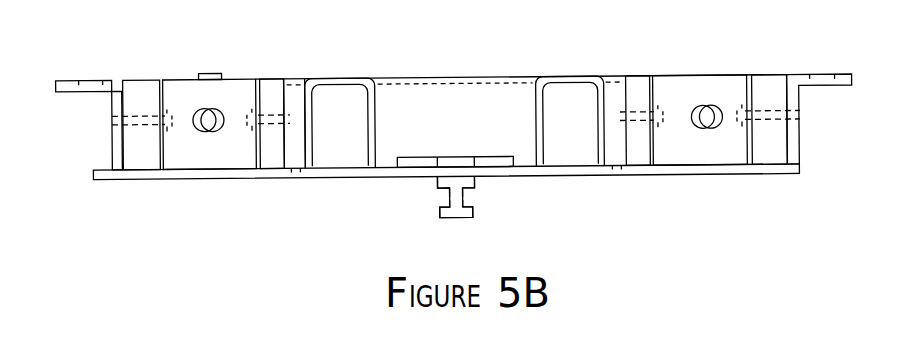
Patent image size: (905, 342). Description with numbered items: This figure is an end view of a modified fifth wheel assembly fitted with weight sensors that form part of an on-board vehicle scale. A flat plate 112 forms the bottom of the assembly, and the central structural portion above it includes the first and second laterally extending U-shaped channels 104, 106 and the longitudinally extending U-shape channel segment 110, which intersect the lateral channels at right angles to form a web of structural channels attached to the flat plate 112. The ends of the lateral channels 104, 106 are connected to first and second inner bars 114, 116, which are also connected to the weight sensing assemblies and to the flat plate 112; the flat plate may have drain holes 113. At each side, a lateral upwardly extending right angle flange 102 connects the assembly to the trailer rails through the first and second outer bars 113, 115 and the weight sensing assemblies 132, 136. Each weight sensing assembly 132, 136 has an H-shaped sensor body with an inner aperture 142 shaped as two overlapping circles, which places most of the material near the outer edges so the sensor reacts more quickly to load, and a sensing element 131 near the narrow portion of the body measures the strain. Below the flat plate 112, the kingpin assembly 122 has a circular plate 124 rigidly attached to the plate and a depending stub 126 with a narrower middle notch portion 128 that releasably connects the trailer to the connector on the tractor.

The right angle flanges 102 is at (54, 92).
The first laterally extending U-shaped channel 104 is at (333, 84).
The second laterally extending U-shaped channel 106 is at (567, 84).
The second longitudinally extending U-shape channel segment 110 is at (455, 83).
The flat plate 112 is at (143, 177).
The first outer bar 113 is at (138, 90).
The first inner bar 114 is at (268, 90).
The second outer bar 115 is at (779, 89).
The second inner bar 116 is at (635, 83).
The kingpin assembly 122 is at (483, 185).
The circular plate 124 is at (457, 158).
The depending stub 126 is at (438, 212).
The narrower middle notch portion 128 is at (444, 200).
The sensing element 131 is at (210, 72).
The weight sensing assembly 132 is at (194, 72).
The weight sensing assembly 136 is at (700, 74).
The inner aperture 142 is at (205, 120).